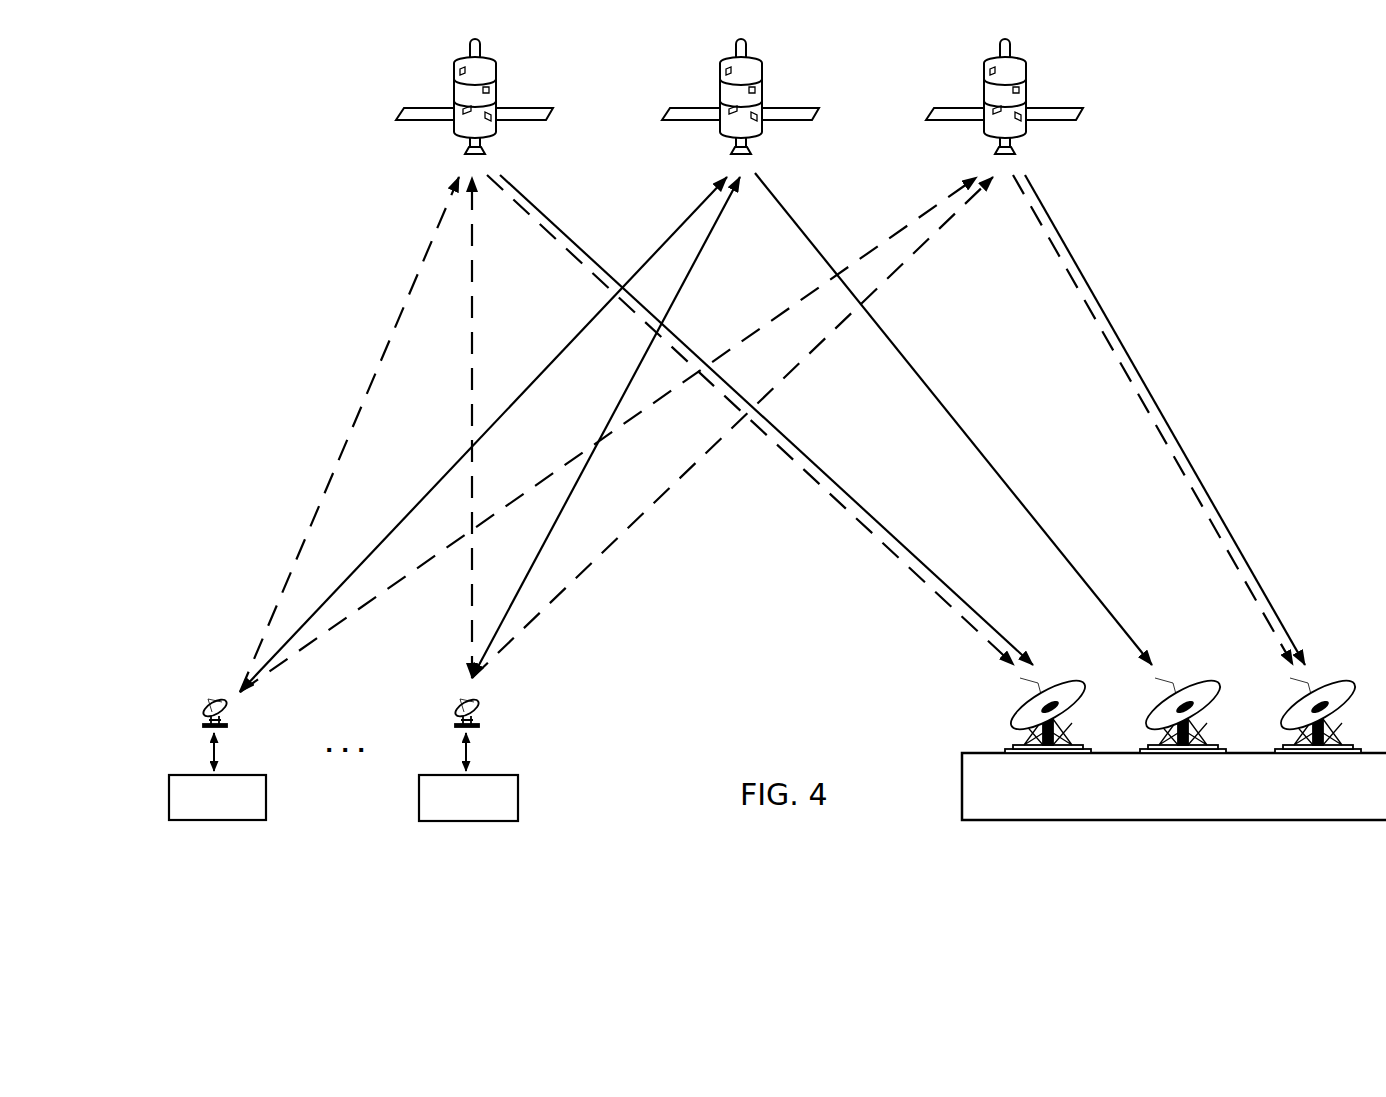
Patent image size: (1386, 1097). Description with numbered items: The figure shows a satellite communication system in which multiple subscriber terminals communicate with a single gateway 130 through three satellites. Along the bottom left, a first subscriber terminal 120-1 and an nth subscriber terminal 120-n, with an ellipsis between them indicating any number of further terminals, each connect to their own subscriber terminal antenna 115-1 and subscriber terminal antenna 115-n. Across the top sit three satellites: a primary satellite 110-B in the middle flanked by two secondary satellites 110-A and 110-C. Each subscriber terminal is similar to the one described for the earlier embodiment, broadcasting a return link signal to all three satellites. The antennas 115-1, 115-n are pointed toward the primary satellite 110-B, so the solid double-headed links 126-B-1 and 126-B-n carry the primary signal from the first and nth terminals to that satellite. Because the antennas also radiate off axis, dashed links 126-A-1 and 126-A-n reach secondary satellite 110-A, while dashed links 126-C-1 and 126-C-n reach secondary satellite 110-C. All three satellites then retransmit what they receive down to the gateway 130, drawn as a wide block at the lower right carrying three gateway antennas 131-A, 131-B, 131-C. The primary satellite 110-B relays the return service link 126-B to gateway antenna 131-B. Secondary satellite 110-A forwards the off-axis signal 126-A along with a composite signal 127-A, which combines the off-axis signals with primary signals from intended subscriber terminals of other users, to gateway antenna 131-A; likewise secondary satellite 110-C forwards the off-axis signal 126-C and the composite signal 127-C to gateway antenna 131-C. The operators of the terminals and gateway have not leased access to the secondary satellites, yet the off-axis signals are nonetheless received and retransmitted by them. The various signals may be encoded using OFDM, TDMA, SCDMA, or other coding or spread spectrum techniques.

The secondary satellite 110-A is at (456, 92).
The primary satellite 110-B is at (726, 92).
The secondary satellite 110-C is at (988, 92).
The subscriber terminal antenna 115-1 is at (208, 702).
The subscriber terminal antenna 115-n is at (458, 702).
The subscriber terminal 120-1 is at (182, 777).
The subscriber terminal 120-n is at (432, 777).
The return link signal 126-A-1 is at (367, 395).
The return link signal 126-A-n is at (474, 292).
The return link signal 126-B-1 is at (461, 458).
The return link signal 126-B-n is at (690, 270).
The return link signal 126-C-1 is at (374, 598).
The return link signal 126-C-n is at (630, 525).
The off-axis signal 126-A is at (795, 445).
The return service link 126-B is at (930, 390).
The off-axis signal 126-C is at (1119, 340).
The composite signal 127-A is at (890, 552).
The composite signal 127-C is at (1147, 410).
The gateway 130 is at (1002, 807).
The gateway antenna 131-A is at (1018, 722).
The gateway antenna 131-B is at (1153, 722).
The gateway antenna 131-C is at (1288, 722).